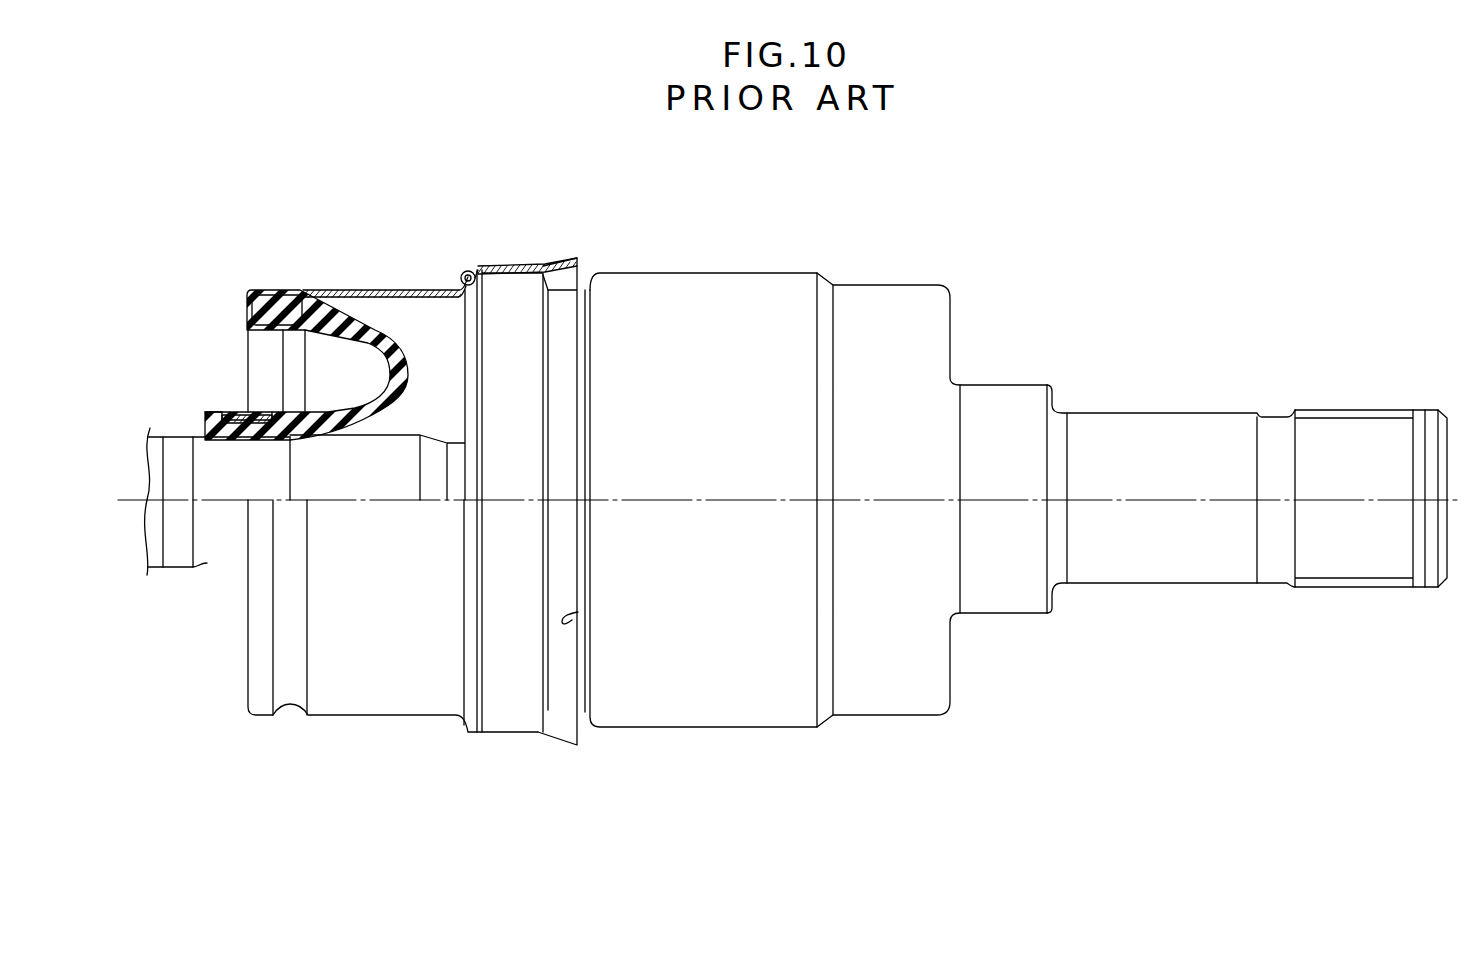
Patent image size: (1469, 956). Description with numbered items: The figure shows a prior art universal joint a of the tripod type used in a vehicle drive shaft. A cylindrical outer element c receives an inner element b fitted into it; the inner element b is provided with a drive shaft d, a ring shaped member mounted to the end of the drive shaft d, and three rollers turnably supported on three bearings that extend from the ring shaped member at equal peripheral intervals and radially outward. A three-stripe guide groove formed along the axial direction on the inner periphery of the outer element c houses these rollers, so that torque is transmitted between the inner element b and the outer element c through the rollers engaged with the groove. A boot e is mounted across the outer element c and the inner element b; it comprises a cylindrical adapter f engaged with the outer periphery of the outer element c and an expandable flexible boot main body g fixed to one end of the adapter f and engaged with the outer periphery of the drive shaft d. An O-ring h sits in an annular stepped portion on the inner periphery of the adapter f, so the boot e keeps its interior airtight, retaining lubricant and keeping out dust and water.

The universal joint a is at (1016, 430).
The inner element b is at (458, 433).
The outer element c is at (724, 265).
The drive shaft d is at (153, 443).
The boot e is at (251, 246).
The cylindrical adapter f is at (387, 290).
The boot main body g is at (352, 403).
The O-ring h is at (470, 274).